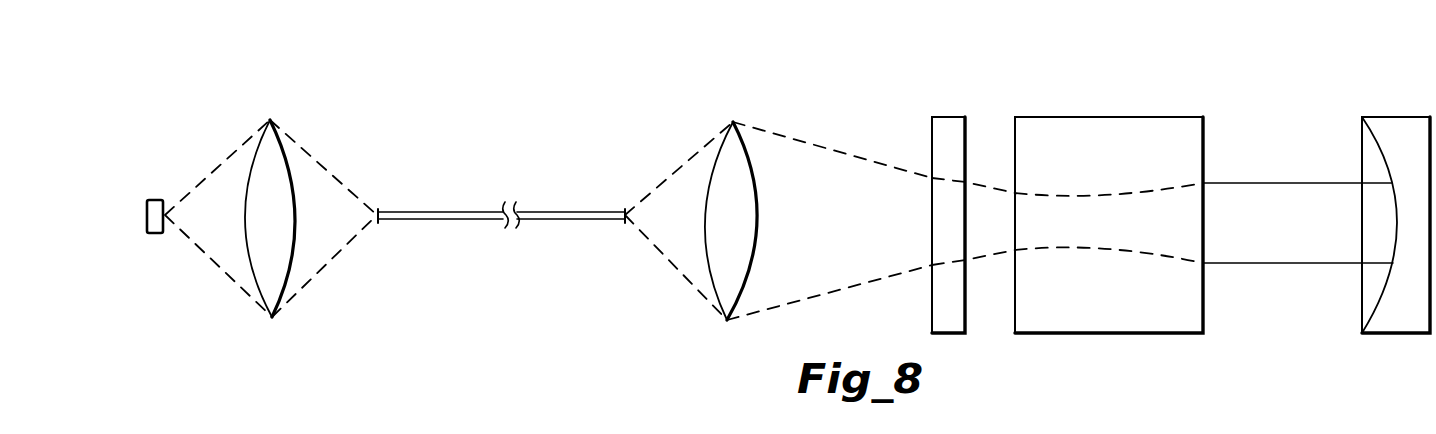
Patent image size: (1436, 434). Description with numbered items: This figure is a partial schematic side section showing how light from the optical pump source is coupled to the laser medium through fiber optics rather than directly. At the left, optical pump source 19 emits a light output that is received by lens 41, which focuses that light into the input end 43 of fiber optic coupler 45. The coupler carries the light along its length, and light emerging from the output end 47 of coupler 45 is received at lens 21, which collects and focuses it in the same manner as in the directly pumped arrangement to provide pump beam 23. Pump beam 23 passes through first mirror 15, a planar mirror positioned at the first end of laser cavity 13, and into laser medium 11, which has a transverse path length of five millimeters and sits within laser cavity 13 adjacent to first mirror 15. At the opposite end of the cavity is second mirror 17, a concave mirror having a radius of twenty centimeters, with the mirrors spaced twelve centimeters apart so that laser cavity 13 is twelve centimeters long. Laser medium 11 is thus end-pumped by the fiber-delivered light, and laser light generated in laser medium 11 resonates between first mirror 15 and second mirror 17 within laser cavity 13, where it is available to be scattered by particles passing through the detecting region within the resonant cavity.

The laser medium 11 is at (1097, 117).
The laser cavity 13 is at (1287, 152).
The first mirror 15 is at (945, 117).
The second mirror 17 is at (1393, 117).
The optical pump source 19 is at (154, 200).
The lens 21 is at (727, 160).
The pump beam 23 is at (377, 223).
The lens 41 is at (287, 135).
The input end 43 is at (380, 212).
The fiber optic coupler 45 is at (488, 212).
The output end 47 is at (624, 212).